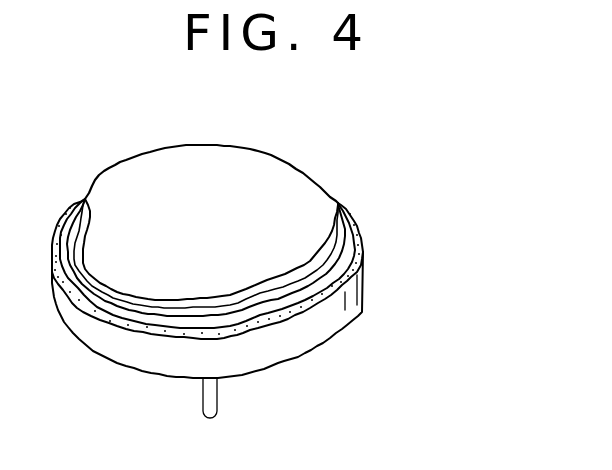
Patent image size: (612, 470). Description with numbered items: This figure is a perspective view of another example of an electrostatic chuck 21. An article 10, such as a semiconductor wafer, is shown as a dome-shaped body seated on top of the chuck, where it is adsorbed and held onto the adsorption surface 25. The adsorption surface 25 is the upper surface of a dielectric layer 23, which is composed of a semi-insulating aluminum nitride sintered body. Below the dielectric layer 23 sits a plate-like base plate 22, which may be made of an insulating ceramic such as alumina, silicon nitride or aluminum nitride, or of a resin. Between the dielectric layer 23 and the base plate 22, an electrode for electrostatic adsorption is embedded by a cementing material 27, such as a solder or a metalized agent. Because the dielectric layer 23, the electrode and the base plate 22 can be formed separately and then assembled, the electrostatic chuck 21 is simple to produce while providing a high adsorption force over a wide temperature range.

The article 10 is at (218, 172).
The electrostatic chuck 21 is at (261, 250).
The base plate 22 is at (334, 323).
The dielectric layer 23 is at (345, 287).
The adsorption surface 25 is at (355, 228).
The cementing material 27 is at (350, 263).